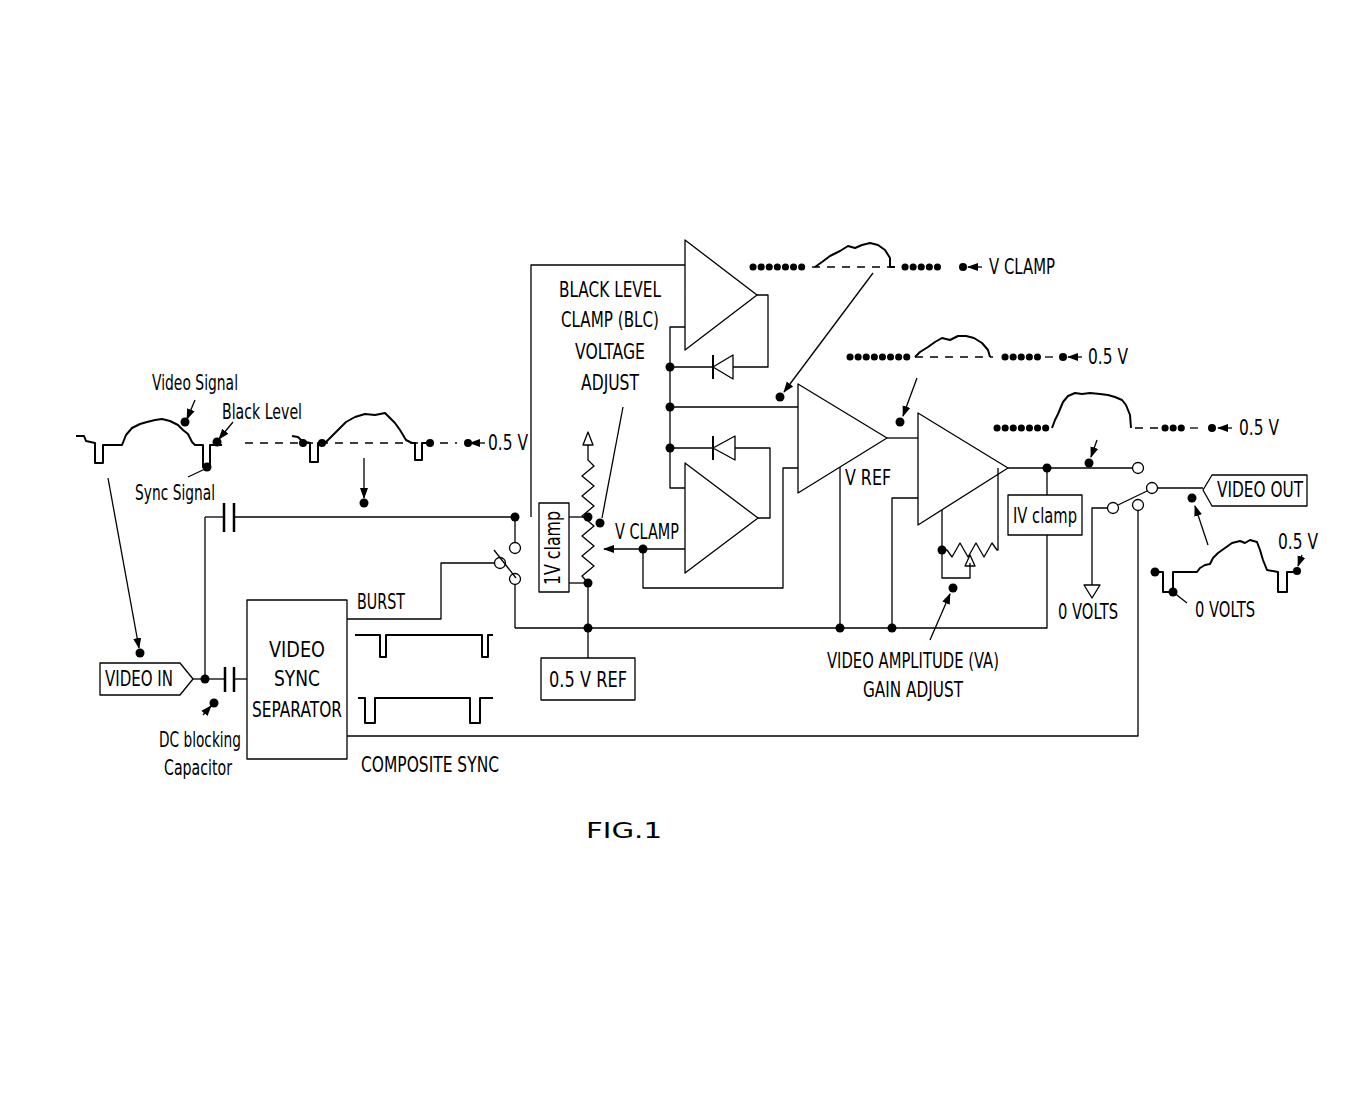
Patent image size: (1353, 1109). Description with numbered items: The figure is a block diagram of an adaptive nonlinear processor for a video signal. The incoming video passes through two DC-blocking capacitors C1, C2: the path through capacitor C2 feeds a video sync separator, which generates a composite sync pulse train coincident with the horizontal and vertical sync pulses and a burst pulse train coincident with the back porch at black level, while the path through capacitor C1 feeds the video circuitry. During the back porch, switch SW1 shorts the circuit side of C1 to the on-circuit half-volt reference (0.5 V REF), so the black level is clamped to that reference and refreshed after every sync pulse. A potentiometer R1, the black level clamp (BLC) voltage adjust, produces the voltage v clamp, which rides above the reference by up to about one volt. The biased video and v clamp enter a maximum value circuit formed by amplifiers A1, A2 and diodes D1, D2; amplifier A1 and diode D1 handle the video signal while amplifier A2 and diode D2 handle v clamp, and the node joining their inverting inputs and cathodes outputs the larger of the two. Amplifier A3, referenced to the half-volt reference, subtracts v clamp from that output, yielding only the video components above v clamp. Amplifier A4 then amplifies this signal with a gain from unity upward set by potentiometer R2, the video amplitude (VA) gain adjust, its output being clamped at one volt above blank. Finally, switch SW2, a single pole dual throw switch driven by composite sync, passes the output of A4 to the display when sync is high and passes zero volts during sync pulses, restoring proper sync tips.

The DC-blocking capacitor C1 is at (360, 533).
The DC-blocking capacitor C2 is at (231, 663).
The switch SW1 is at (497, 571).
The single pole dual throw switch SW2 is at (1145, 496).
The potentiometer R1 is at (606, 530).
The potentiometer R2 is at (968, 523).
The amplifier A1 is at (721, 295).
The amplifier A2 is at (721, 518).
The amplifier A3 is at (842, 438).
The amplifier A4 is at (963, 468).
The diode D1 is at (713, 357).
The diode D2 is at (720, 466).